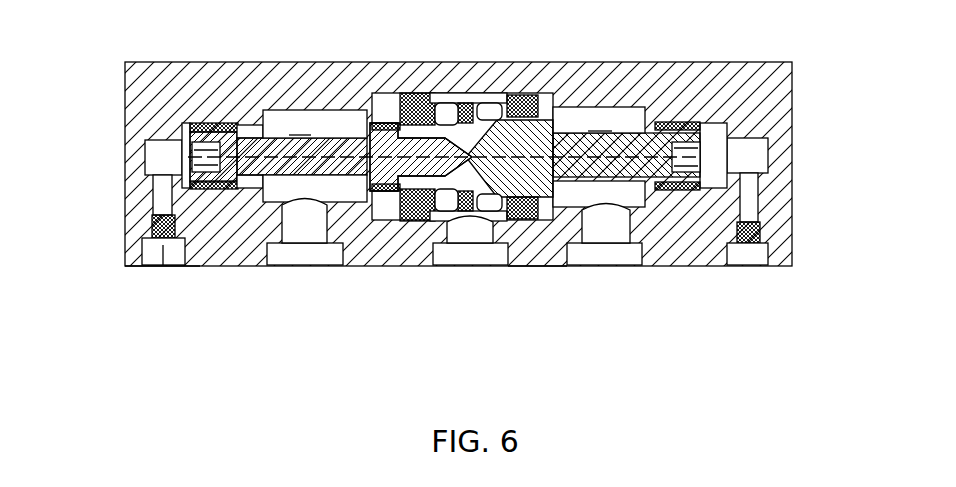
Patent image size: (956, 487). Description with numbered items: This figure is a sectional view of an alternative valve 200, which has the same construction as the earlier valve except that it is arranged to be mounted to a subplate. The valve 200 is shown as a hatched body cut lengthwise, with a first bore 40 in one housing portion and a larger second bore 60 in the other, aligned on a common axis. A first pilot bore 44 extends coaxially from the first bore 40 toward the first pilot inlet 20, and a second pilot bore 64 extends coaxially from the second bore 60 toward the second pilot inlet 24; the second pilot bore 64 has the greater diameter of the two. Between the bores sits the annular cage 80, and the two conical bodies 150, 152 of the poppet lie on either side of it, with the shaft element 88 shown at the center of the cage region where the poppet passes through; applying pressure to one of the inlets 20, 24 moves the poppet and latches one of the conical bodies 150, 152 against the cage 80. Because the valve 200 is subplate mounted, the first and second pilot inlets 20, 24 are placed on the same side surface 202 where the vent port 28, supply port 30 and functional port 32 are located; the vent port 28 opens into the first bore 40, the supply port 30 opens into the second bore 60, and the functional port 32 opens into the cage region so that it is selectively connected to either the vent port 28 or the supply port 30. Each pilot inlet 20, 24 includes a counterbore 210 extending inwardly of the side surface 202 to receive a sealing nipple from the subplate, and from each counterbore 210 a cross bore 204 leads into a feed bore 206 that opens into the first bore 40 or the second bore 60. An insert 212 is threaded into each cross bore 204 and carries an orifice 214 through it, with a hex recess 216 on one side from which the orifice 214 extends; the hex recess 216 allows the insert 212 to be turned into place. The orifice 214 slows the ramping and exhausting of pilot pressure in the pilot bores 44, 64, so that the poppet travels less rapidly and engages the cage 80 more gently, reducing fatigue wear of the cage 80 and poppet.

The first pilot inlet 20 is at (153, 266).
The second pilot inlet 24 is at (760, 266).
The vent port 28 is at (300, 266).
The supply port 30 is at (623, 266).
The functional port 32 is at (479, 266).
The first bore 40 is at (278, 156).
The first pilot bore 44 is at (186, 123).
The second bore 60 is at (626, 157).
The second pilot bore 64 is at (716, 124).
The annular cage 80 is at (518, 95).
The shaft head 88 is at (340, 135).
The conical body 150 is at (372, 192).
The conical body 152 is at (553, 116).
The valve 200 is at (762, 103).
The side surface 202 is at (533, 266).
The cross bore 204 is at (163, 203).
The feed bore 206 is at (167, 153).
The counterbore 210 is at (273, 264).
The insert 212 is at (150, 250).
The orifice 214 is at (152, 227).
The hex recess 216 is at (163, 248).